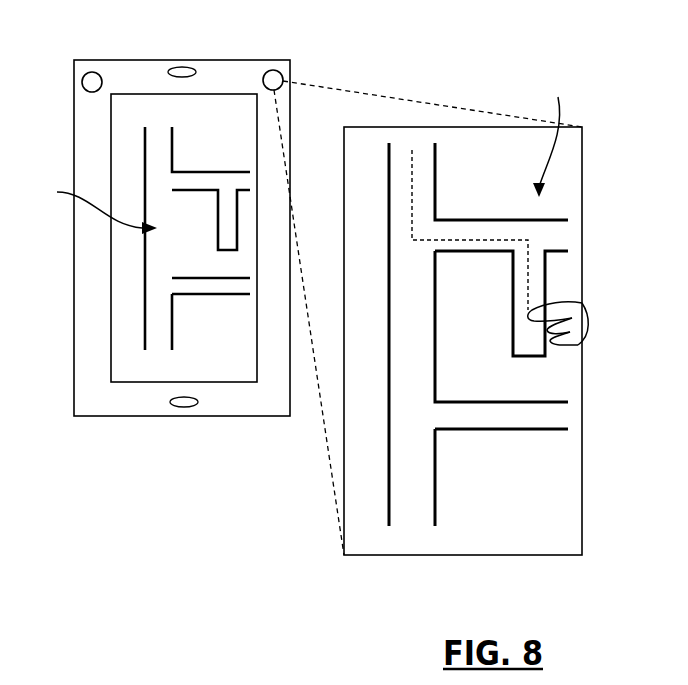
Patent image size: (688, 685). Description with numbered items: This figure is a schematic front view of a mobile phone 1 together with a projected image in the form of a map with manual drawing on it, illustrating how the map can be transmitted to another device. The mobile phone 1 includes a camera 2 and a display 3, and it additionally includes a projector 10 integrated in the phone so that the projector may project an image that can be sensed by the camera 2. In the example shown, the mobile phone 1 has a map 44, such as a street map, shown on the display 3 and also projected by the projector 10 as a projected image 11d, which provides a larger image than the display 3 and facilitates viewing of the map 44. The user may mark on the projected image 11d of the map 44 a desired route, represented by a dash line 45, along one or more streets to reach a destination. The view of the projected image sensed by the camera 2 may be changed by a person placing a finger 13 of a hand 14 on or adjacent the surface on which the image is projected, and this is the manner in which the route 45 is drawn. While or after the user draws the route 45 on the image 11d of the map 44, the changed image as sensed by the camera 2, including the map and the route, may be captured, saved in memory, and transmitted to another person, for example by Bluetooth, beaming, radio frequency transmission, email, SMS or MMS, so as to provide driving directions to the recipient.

The mobile phone 1 is at (193, 58).
The camera 2 is at (100, 80).
The display 3 is at (117, 140).
The projector 10 is at (298, 62).
The projected image 11d is at (455, 105).
The finger 13 is at (553, 310).
The hand 14 is at (590, 333).
The map 44 is at (296, 151).
The route 45 is at (504, 240).